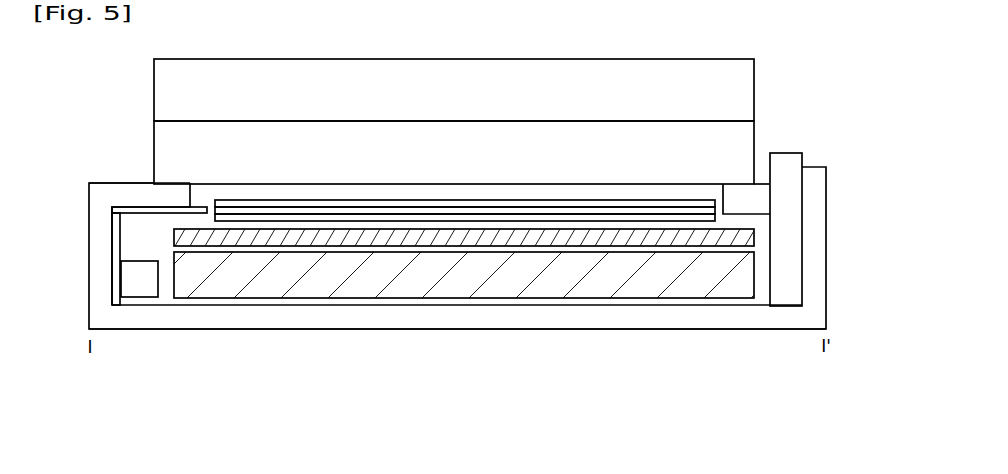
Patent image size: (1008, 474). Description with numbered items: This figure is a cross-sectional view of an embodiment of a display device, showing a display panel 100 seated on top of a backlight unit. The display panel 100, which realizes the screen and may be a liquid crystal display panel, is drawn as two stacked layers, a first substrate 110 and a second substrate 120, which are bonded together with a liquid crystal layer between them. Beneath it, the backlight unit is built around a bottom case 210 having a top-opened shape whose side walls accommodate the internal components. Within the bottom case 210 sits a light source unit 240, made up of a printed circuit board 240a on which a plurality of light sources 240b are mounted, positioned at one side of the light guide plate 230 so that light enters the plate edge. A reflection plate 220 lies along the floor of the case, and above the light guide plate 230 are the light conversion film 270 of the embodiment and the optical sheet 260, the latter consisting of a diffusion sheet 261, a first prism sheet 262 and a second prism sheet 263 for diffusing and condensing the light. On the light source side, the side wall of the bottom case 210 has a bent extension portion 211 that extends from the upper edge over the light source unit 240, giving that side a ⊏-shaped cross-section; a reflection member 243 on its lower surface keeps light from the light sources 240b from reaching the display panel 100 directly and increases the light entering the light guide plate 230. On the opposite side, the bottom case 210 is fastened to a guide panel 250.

The display panel 100 is at (519, 118).
The first substrate 110 is at (743, 142).
The second substrate 120 is at (743, 88).
The bottom case 210 is at (457, 244).
The bent extension portion 211 is at (119, 167).
The reflection plate 220 is at (338, 305).
The light guide plate 230 is at (635, 285).
The light source unit 240 is at (148, 330).
The printed circuit board 240a is at (116, 305).
The light sources 240b is at (138, 292).
The reflection member 243 is at (147, 212).
The guide panel 250 is at (787, 283).
The optical sheet 260 is at (465, 314).
The diffusion sheet 261 is at (453, 218).
The first prism sheet 262 is at (488, 210).
The second prism sheet 263 is at (524, 204).
The light conversion film 270 is at (587, 238).